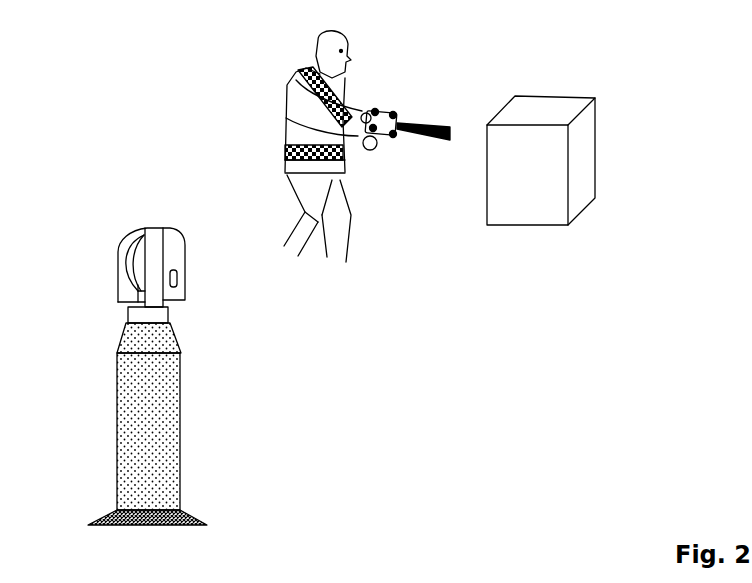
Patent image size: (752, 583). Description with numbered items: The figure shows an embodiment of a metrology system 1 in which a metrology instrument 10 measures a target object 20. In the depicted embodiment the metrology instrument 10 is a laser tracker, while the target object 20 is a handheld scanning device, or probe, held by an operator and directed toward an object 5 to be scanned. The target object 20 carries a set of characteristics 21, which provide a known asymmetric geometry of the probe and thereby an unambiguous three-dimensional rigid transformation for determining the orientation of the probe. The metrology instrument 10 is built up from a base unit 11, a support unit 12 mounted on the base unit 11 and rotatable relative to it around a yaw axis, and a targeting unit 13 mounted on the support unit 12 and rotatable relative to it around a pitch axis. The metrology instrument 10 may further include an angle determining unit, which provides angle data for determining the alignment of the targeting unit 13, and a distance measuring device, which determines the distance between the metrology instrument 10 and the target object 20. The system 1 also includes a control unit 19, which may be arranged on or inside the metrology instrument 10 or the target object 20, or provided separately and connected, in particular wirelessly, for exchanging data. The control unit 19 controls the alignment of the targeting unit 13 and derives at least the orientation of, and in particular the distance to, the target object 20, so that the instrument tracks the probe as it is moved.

The metrology system 1 is at (128, 53).
The target object 5 is at (531, 186).
The metrology instrument 10 is at (108, 216).
The base unit 11 is at (127, 315).
The support unit 12 is at (116, 296).
The targeting unit 13 is at (130, 258).
The control unit 19 is at (178, 280).
The target object 20 is at (382, 98).
The characteristics 21 is at (397, 113).